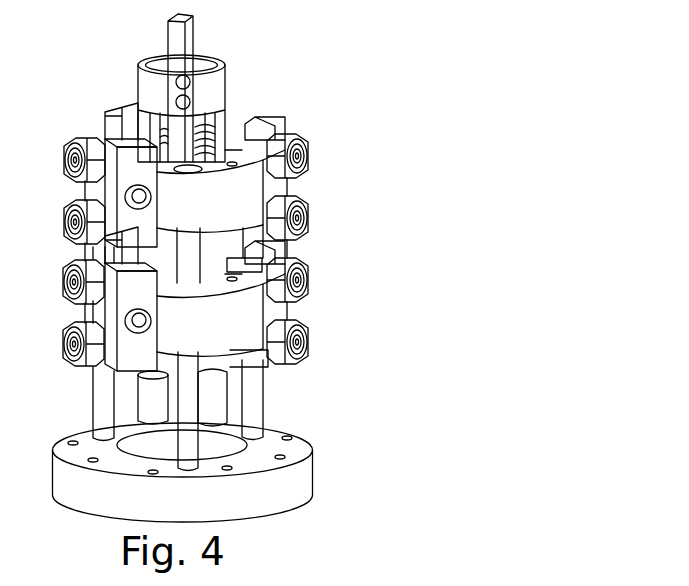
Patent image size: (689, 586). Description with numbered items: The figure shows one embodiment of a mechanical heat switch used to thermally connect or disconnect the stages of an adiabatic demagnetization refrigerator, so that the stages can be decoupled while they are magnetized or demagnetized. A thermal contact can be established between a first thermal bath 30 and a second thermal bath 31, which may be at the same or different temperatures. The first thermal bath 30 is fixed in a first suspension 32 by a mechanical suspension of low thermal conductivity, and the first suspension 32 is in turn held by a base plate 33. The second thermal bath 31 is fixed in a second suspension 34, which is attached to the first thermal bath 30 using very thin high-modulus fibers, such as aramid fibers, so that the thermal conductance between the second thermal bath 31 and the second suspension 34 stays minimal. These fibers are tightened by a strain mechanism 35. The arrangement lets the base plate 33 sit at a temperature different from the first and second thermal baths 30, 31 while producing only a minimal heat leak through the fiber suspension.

The first thermal bath 30 is at (231, 82).
The second thermal bath 31 is at (207, 402).
The first suspension 32 is at (290, 186).
The base plate 33 is at (301, 445).
The second suspension 34 is at (292, 252).
The strain mechanism 35 is at (297, 150).